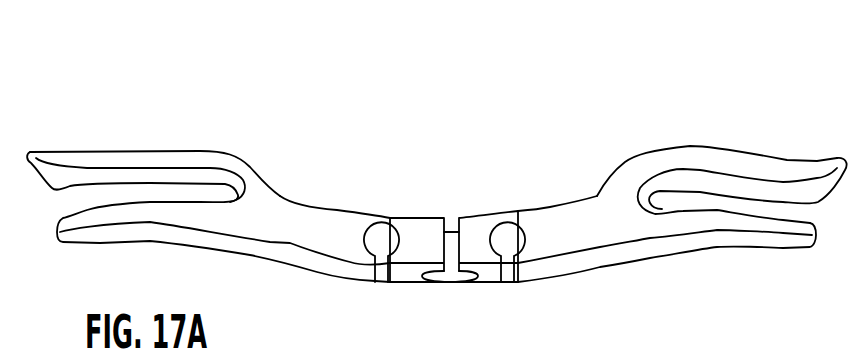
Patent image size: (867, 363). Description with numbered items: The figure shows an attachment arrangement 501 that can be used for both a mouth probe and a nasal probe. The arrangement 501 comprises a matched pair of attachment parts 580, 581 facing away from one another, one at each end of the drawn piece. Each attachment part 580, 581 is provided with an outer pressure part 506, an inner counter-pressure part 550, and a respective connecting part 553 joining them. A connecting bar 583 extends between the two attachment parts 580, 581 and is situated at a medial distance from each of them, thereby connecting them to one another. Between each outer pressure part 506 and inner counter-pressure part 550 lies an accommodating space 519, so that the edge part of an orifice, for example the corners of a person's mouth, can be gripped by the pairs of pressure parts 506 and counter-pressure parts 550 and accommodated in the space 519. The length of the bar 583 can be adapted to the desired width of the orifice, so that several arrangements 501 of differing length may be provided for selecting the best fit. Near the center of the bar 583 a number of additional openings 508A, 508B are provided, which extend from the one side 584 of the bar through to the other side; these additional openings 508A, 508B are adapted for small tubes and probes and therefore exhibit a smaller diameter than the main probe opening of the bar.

The attachment arrangement 501 is at (557, 181).
The outer pressure part 506 is at (87, 148).
The additional opening 508A is at (375, 282).
The additional opening 508B is at (512, 282).
The accommodating space 519 is at (172, 187).
The inner counter-pressure part 550 is at (102, 215).
The connecting part 553 is at (253, 217).
The attachment part 580 is at (135, 137).
The attachment part 581 is at (703, 148).
The connecting bar 583 is at (417, 217).
The side of the bar 584 is at (477, 233).